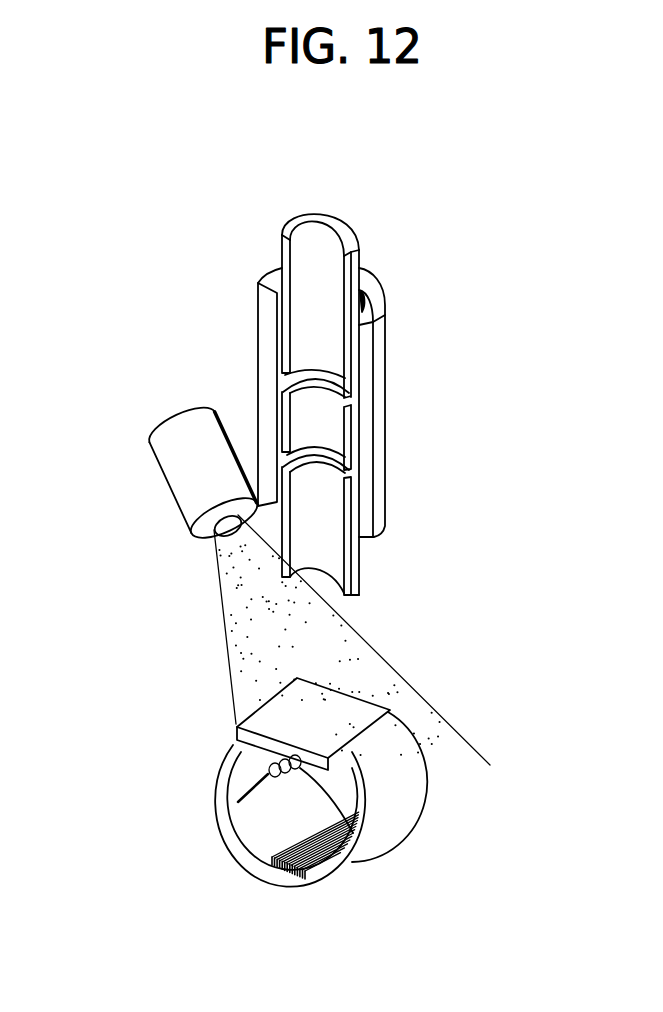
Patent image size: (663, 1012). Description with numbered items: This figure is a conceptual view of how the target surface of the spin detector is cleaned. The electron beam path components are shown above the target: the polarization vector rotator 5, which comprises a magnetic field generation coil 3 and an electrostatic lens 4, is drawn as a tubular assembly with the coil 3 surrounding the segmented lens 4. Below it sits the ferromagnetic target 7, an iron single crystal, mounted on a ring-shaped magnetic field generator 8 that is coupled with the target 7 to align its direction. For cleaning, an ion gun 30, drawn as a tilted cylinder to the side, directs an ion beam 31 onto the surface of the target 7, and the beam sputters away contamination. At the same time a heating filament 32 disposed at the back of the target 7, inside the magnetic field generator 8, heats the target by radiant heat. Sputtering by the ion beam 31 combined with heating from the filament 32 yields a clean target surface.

The magnetic field generation coil 3 is at (380, 336).
The electrostatic lens 4 is at (347, 380).
The polarization vector rotator 5 is at (463, 308).
The ferromagnetic target 7 is at (343, 711).
The magnetic field generator 8 is at (397, 807).
The ion gun 30 is at (178, 463).
The ion beam 31 is at (228, 650).
The heating filament 32 is at (243, 790).